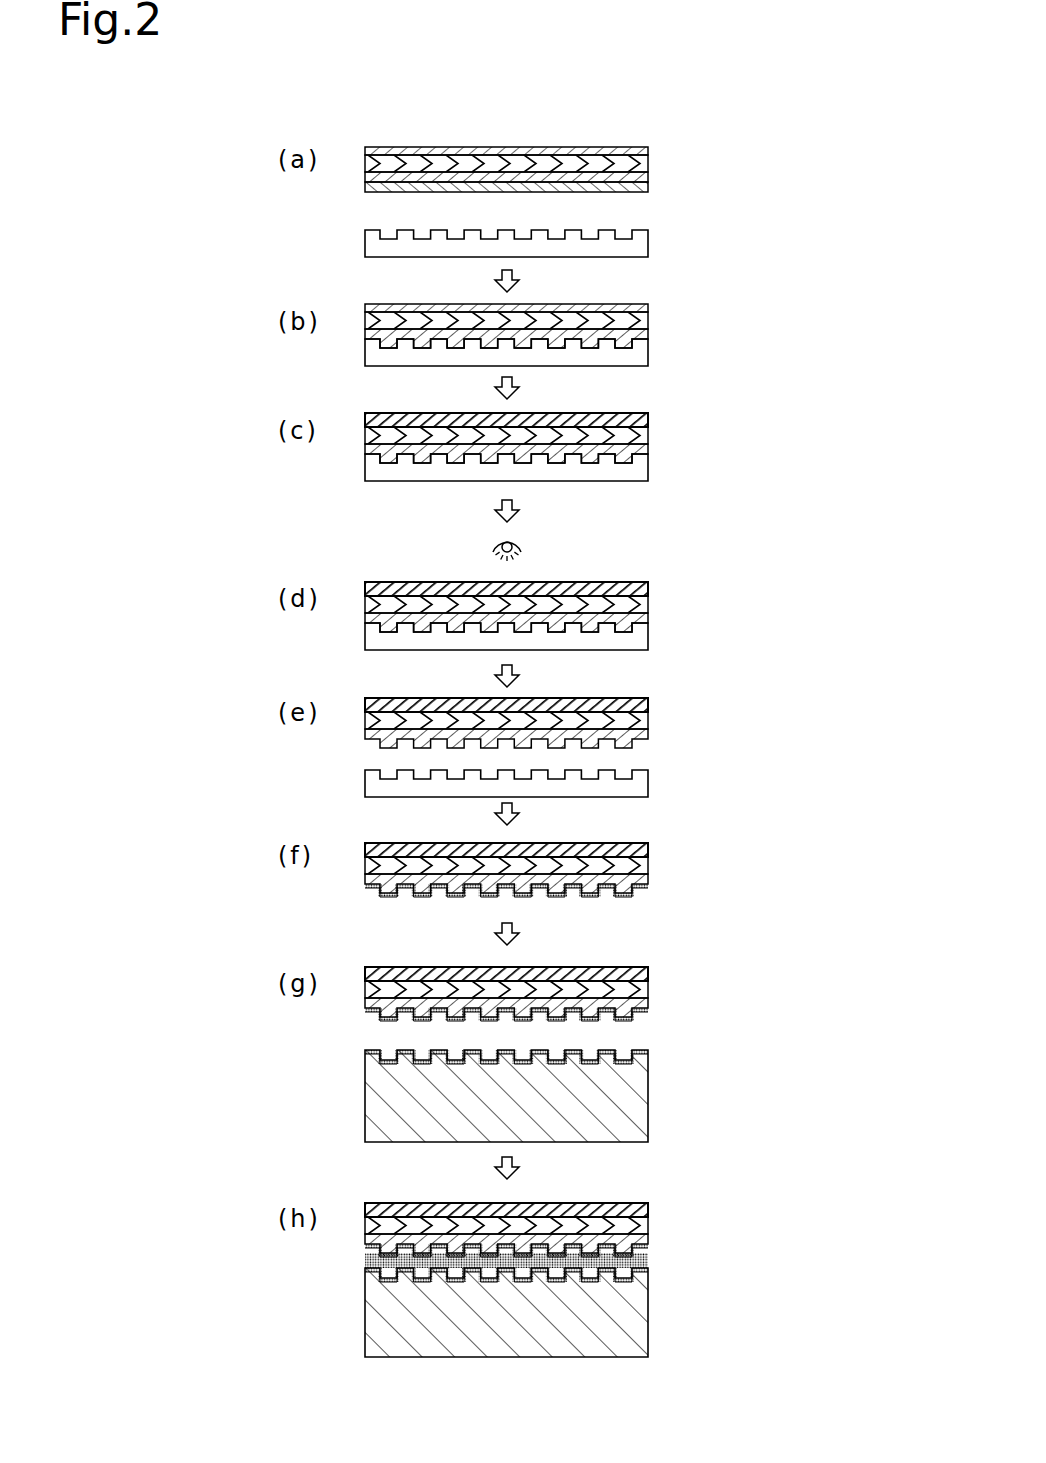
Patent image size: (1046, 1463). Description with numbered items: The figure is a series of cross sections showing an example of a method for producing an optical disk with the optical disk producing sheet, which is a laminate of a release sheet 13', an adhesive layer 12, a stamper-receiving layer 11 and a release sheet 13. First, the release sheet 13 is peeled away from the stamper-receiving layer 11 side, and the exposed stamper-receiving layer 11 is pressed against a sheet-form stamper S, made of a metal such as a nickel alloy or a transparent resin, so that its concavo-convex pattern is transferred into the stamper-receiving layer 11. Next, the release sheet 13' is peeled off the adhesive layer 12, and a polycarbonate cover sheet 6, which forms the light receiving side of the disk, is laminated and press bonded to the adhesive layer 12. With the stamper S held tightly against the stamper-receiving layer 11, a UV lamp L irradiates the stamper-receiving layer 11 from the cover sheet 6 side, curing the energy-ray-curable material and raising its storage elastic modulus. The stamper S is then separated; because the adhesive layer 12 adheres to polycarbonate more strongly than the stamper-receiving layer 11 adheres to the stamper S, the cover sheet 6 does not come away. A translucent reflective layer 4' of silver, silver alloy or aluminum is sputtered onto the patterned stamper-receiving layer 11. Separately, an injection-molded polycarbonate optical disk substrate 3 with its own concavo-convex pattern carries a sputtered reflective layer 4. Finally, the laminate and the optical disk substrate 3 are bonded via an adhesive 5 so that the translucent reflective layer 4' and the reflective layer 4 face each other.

The release sheet 13' is at (544, 218).
The adhesive layer 12 is at (561, 691).
The stamper-receiving layer 11 is at (568, 712).
The release sheet 13 is at (540, 202).
The stamper S is at (648, 247).
The cover sheet 6 is at (532, 805).
The UV lamp L is at (524, 545).
The translucent reflective layer 4' is at (537, 1076).
The reflective layer 4 is at (534, 1177).
The optical disk substrate 3 is at (648, 1100).
The adhesive 5 is at (648, 1262).